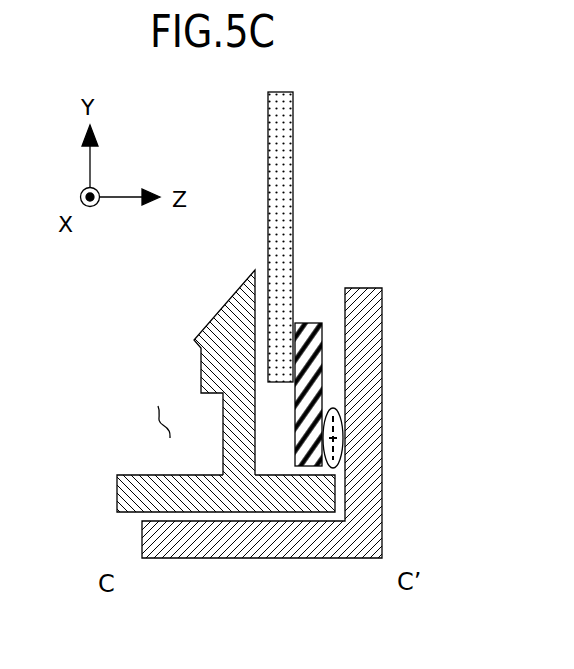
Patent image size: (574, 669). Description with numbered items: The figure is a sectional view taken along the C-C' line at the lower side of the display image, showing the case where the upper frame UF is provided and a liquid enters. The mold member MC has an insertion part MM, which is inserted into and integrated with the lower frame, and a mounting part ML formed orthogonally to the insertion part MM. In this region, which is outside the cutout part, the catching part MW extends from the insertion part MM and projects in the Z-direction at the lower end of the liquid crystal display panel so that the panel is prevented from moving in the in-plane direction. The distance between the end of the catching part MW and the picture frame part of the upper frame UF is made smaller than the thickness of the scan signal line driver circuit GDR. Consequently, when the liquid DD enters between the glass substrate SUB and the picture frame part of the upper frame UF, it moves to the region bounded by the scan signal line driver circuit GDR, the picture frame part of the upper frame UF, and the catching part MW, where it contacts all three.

The glass substrate SUB is at (291, 108).
The mounting part ML is at (225, 319).
The insertion part MM is at (189, 444).
The catching part MW is at (288, 490).
The mold member MC is at (178, 405).
The scan signal line driver circuit GDR is at (308, 323).
The upper frame UF is at (378, 288).
The liquid DD is at (339, 438).